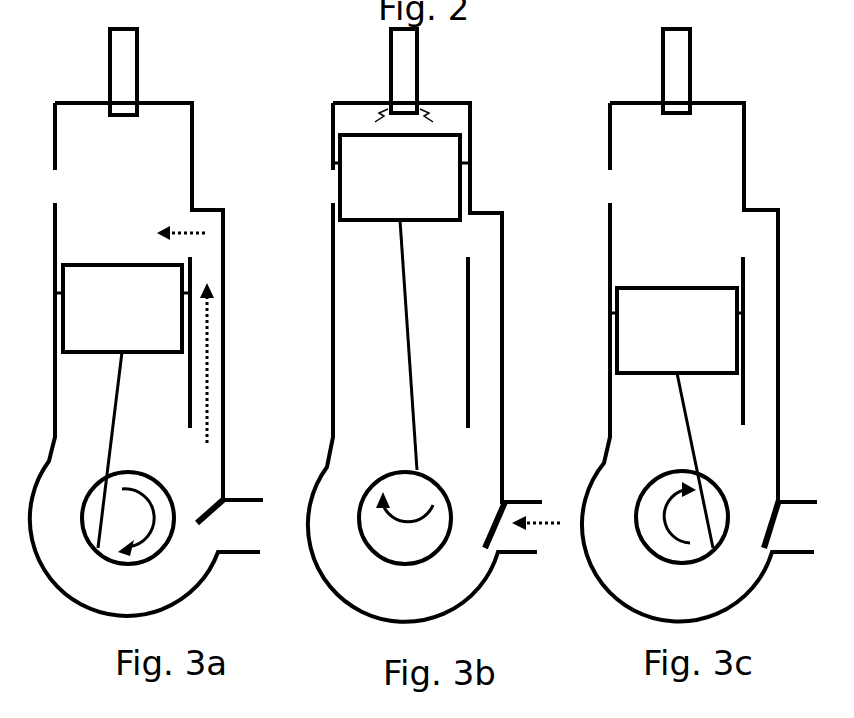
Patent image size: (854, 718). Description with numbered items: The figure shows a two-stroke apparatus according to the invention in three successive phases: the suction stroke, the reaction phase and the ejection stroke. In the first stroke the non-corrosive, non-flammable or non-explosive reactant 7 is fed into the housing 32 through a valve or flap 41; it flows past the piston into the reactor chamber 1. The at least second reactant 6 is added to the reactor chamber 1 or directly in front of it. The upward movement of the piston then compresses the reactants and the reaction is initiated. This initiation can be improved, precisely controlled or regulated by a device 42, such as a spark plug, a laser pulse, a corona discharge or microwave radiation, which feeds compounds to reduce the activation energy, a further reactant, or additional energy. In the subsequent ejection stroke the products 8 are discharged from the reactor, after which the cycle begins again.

In FIG. 3A, the reactor chamber 1 is at (146, 359).
In FIG. 3B, the reactor chamber 1 is at (434, 362).
In FIG. 3C, the reactor chamber 1 is at (699, 362).
In FIG. 3A, the second reactant 6 is at (204, 127).
In FIG. 3A, the reactant 7 is at (238, 523).
In FIG. 3C, the products 8 is at (600, 190).
In FIG. 3A, the housing 32 is at (128, 493).
In FIG. 3B, the housing 32 is at (405, 518).
In FIG. 3C, the housing 32 is at (682, 517).
In FIG. 3A, the valve or flap 41 is at (220, 496).
In FIG. 3B, the valve or flap 41 is at (495, 525).
In FIG. 3C, the valve or flap 41 is at (771, 524).
In FIG. 3A, the device for feeding compounds or supplying additional energy 42 is at (123, 72).
In FIG. 3B, the device for feeding compounds or supplying additional energy 42 is at (417, 72).
In FIG. 3C, the device for feeding compounds or supplying additional energy 42 is at (676, 71).